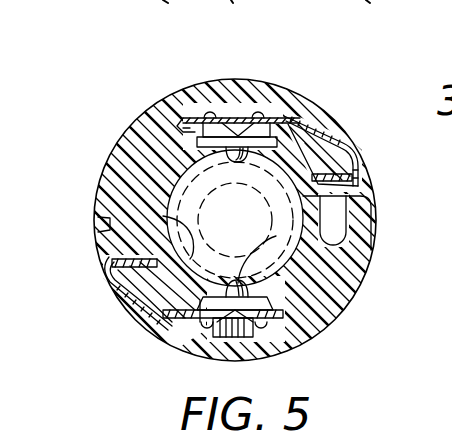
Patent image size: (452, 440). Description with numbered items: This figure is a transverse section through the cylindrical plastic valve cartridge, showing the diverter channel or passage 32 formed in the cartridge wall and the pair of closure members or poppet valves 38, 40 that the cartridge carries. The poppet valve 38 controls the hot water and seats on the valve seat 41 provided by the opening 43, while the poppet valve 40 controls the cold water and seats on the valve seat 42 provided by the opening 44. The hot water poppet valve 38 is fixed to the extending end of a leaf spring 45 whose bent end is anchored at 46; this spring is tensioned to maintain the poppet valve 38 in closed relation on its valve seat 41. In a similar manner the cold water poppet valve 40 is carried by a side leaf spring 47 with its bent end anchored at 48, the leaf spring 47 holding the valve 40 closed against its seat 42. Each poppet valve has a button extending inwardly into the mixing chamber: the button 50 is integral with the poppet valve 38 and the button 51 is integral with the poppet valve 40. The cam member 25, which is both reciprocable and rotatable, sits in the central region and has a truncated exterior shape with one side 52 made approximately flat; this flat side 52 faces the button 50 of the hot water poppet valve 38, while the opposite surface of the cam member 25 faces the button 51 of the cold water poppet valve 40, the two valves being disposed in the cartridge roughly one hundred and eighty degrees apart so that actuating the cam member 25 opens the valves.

The cam member 25 is at (277, 205).
The diverter channel or passage 32 is at (342, 235).
The poppet valve 38 is at (270, 112).
The poppet valve 40 is at (302, 344).
The valve seat 41 is at (183, 128).
The valve seat 42 is at (180, 300).
The opening 43 is at (195, 147).
The opening 44 is at (264, 291).
The leaf spring 45 is at (320, 128).
The anchor point of leaf spring 46 is at (372, 184).
The leaf spring 47 is at (120, 303).
The anchor point of leaf spring 48 is at (113, 262).
The button 50 is at (227, 156).
The button 51 is at (274, 251).
The flat side of cam member 52 is at (168, 220).